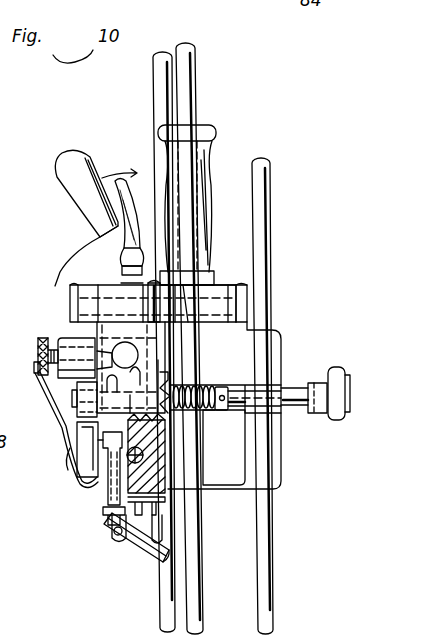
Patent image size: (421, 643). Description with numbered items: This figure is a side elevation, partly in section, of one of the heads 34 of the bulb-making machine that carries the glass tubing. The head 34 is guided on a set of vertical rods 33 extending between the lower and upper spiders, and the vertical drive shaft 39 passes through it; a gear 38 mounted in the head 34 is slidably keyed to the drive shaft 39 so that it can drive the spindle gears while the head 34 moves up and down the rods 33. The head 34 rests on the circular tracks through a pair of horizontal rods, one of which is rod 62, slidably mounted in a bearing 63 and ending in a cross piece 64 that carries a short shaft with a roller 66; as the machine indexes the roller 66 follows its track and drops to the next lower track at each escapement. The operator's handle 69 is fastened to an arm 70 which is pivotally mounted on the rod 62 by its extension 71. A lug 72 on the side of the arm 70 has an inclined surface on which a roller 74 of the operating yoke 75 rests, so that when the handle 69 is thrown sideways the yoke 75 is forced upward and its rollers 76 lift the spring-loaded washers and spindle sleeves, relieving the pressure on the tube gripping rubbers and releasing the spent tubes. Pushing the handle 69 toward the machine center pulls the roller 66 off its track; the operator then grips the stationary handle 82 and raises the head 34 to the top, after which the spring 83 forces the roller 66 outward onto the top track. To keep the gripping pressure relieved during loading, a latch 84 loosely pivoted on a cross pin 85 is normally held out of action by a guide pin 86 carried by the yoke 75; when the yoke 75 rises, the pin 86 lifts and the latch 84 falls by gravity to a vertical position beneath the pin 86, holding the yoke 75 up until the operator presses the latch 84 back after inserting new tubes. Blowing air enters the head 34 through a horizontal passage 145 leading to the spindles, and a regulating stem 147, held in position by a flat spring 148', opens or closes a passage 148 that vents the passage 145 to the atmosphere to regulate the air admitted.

The vertical rods 33 is at (153, 94).
The head 34 is at (283, 343).
The gear 38 is at (212, 305).
The drive shaft 39 is at (193, 73).
The horizontal rod 62 is at (297, 406).
The bearing 63 is at (283, 384).
The cross piece 64 is at (315, 406).
The roller 66 is at (338, 372).
The handle 69 is at (63, 175).
The arm 70 is at (72, 297).
The extension 71 is at (82, 408).
The lug 72 is at (82, 458).
The roller 74 is at (98, 448).
The operating yoke 75 is at (105, 452).
The rollers 76 is at (125, 462).
The stationary handle 82 is at (208, 158).
The spring 83 is at (211, 385).
The latch 84 is at (147, 562).
The cross pin 85 is at (113, 538).
The guide pin 86 is at (100, 495).
The horizontal passage 145 is at (143, 350).
The regulating stem 147 is at (42, 338).
The passage 148 is at (99, 233).
The flat spring 148' is at (51, 425).